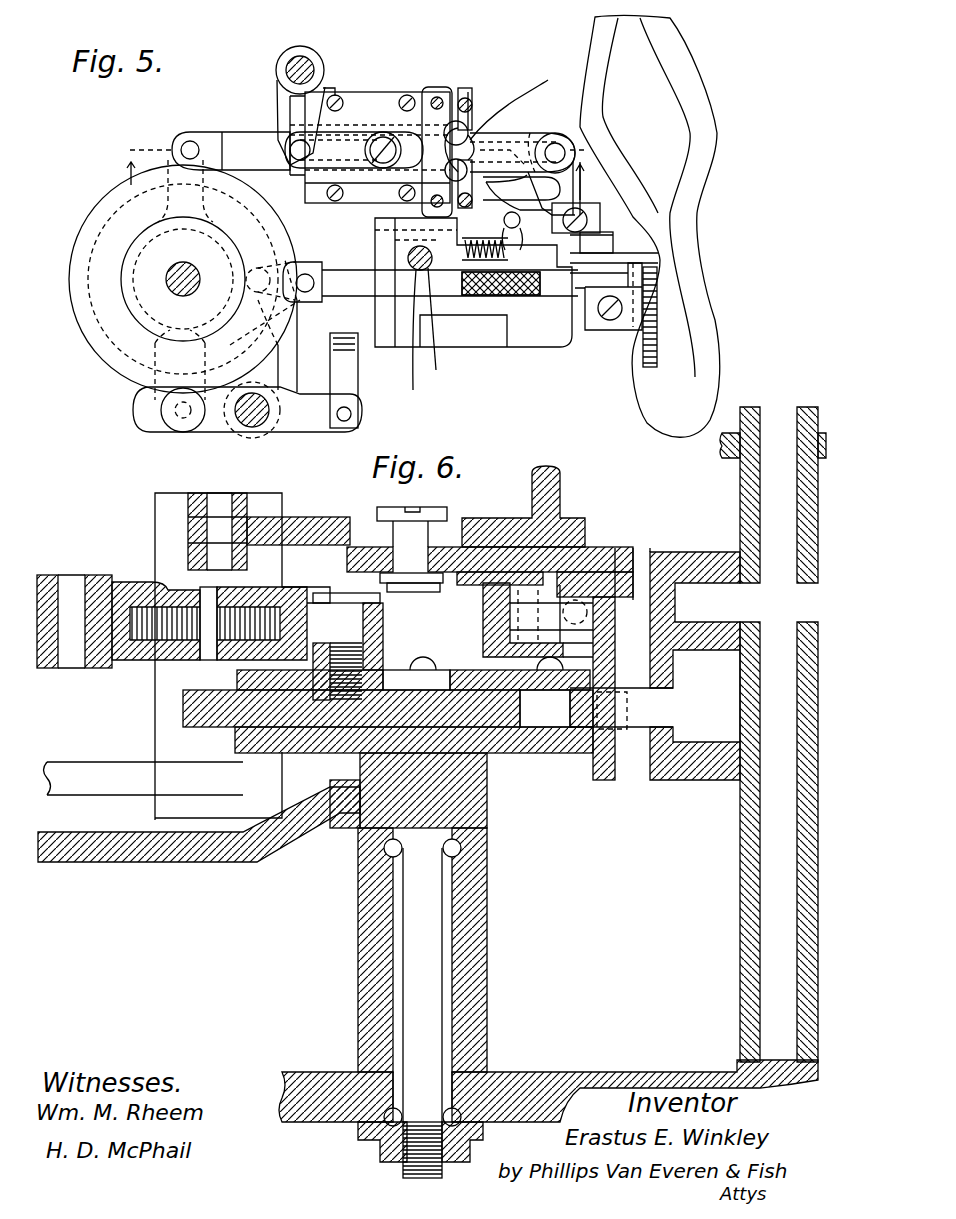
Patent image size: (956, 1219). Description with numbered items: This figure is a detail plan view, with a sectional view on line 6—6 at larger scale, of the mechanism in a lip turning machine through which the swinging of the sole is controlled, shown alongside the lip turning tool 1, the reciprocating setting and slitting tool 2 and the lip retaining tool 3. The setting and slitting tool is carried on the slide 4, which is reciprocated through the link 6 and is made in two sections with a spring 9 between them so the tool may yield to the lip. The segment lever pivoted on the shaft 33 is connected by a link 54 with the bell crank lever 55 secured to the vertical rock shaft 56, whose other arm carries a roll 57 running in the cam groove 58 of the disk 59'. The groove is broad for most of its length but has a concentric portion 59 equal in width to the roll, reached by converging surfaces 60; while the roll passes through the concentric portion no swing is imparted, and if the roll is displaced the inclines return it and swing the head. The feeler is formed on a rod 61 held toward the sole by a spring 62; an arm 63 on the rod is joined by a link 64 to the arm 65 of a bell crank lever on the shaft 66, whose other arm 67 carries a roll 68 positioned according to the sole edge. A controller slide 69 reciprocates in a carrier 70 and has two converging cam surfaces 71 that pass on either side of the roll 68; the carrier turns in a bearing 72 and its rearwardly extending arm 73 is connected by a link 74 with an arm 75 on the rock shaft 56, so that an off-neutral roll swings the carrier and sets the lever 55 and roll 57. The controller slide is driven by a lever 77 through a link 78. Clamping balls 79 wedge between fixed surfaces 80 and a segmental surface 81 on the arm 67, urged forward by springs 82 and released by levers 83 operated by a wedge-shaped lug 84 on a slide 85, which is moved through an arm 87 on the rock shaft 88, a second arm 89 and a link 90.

In FIG. 5, the lip turning tool 1 is at (650, 222).
In FIG. 5, the setting and slitting tool 2 is at (658, 255).
In FIG. 5, the lip retaining tool 3 is at (657, 273).
In FIG. 5, the slide 4 is at (597, 330).
In FIG. 5, the link 6 is at (357, 169).
In FIG. 5, the spring 9 is at (512, 297).
In FIG. 5, the shaft 33 is at (414, 344).
In FIG. 5, the link 54 is at (360, 372).
In FIG. 5, the bell crank lever 55 is at (300, 435).
In FIG. 5, the vertical rock shaft 56 is at (248, 428).
In FIG. 5, the roll 57 is at (270, 268).
In FIG. 5, the cam groove 58 is at (115, 330).
In FIG. 5, the concentric portion 59 is at (279, 326).
In FIG. 5, the disk 59' is at (125, 203).
In FIG. 5, the converging surfaces 60 is at (300, 262).
In FIG. 5, the rod 61 is at (590, 222).
In FIG. 5, the spring 62 is at (485, 238).
In FIG. 5, the arm 63 is at (504, 224).
In FIG. 5, the link 64 is at (530, 202).
In FIG. 5, the arm 65 is at (557, 190).
In FIG. 5, the shaft 66 is at (557, 142).
In FIG. 6, the shaft 66 is at (778, 425).
In FIG. 5, the arm 67 is at (528, 138).
In FIG. 6, the arm 67 is at (694, 782).
In FIG. 5, the roll 68 is at (522, 130).
In FIG. 6, the roll 68 is at (668, 703).
In FIG. 6, the controller slide 69 is at (510, 722).
In FIG. 6, the carrier 70 is at (487, 800).
In FIG. 5, the converging cam surfaces 71 is at (498, 130).
In FIG. 6, the converging cam surfaces 71 is at (590, 722).
In FIG. 6, the bearing 72 is at (480, 930).
In FIG. 5, the rearwardly extending arm 73 is at (248, 133).
In FIG. 6, the rearwardly extending arm 73 is at (182, 864).
In FIG. 5, the link 74 is at (160, 358).
In FIG. 5, the arm 75 is at (212, 432).
In FIG. 6, the lever 77 is at (52, 665).
In FIG. 5, the link 78 is at (345, 135).
In FIG. 6, the link 78 is at (128, 585).
In FIG. 5, the clamping balls 79 is at (472, 132).
In FIG. 5, the fixed surfaces 80 is at (462, 90).
In FIG. 5, the segmental surface 81 is at (519, 99).
In FIG. 6, the segmental surface 81 is at (540, 630).
In FIG. 5, the springs 82 is at (470, 100).
In FIG. 6, the springs 82 is at (640, 560).
In FIG. 5, the levers 83 is at (450, 125).
In FIG. 6, the levers 83 is at (510, 608).
In FIG. 5, the wedge-shaped lug 84 is at (492, 135).
In FIG. 6, the wedge-shaped lug 84 is at (585, 570).
In FIG. 5, the slide 85 is at (425, 108).
In FIG. 6, the slide 85 is at (455, 545).
In FIG. 5, the arm 87 is at (282, 88).
In FIG. 5, the rock shaft 88 is at (295, 60).
In FIG. 5, the second arm 89 is at (305, 105).
In FIG. 6, the second arm 89 is at (190, 547).
In FIG. 5, the link 90 is at (330, 110).
In FIG. 6, the link 90 is at (330, 520).